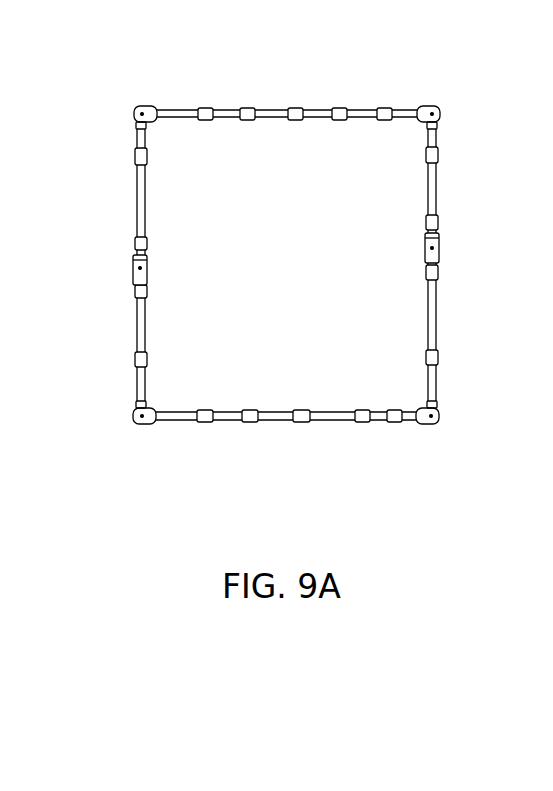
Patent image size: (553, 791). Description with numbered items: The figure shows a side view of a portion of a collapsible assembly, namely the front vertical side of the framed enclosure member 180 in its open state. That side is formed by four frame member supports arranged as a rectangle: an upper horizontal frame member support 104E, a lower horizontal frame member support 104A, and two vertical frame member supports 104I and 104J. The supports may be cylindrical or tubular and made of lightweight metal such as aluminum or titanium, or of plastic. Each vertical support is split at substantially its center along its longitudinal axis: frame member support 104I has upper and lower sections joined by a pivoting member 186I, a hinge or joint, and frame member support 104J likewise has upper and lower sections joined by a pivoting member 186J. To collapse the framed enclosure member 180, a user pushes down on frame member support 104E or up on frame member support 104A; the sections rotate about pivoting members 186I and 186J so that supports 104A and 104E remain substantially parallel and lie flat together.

The framed enclosure member 180 is at (457, 468).
The frame member support 104E is at (267, 105).
The frame member support 104A is at (275, 423).
The frame member support 104I is at (133, 140).
The frame member support 104J is at (426, 228).
The pivoting member 186I is at (156, 271).
The pivoting member 186J is at (444, 253).